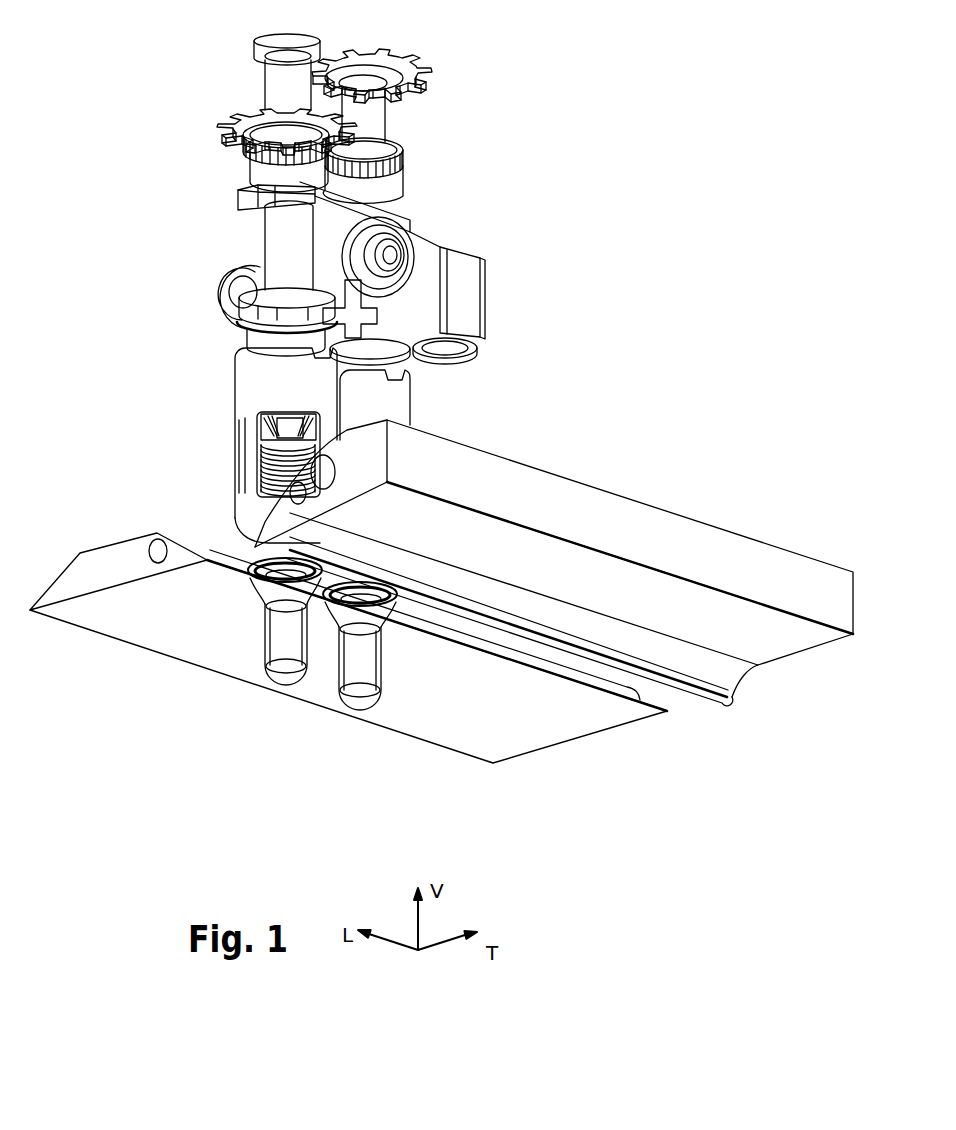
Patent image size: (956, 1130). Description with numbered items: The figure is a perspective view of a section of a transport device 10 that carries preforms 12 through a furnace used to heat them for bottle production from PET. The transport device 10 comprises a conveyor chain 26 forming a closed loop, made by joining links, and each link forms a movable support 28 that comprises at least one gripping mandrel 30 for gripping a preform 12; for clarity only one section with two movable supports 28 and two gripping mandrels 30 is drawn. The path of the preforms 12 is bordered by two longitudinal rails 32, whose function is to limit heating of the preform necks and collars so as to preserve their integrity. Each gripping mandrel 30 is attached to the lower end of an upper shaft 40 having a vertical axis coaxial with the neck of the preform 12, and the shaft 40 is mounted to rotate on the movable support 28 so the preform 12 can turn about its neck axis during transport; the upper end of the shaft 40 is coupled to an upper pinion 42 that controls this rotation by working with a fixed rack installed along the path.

The transport device 10 is at (514, 259).
The preform 12 is at (282, 643).
The conveyor chain 26 is at (492, 305).
The movable support 28 is at (458, 272).
The gripping mandrel 30 is at (263, 461).
The longitudinal rail 32 is at (580, 505).
The upper shaft 40 is at (286, 428).
The upper pinion 42 is at (241, 119).